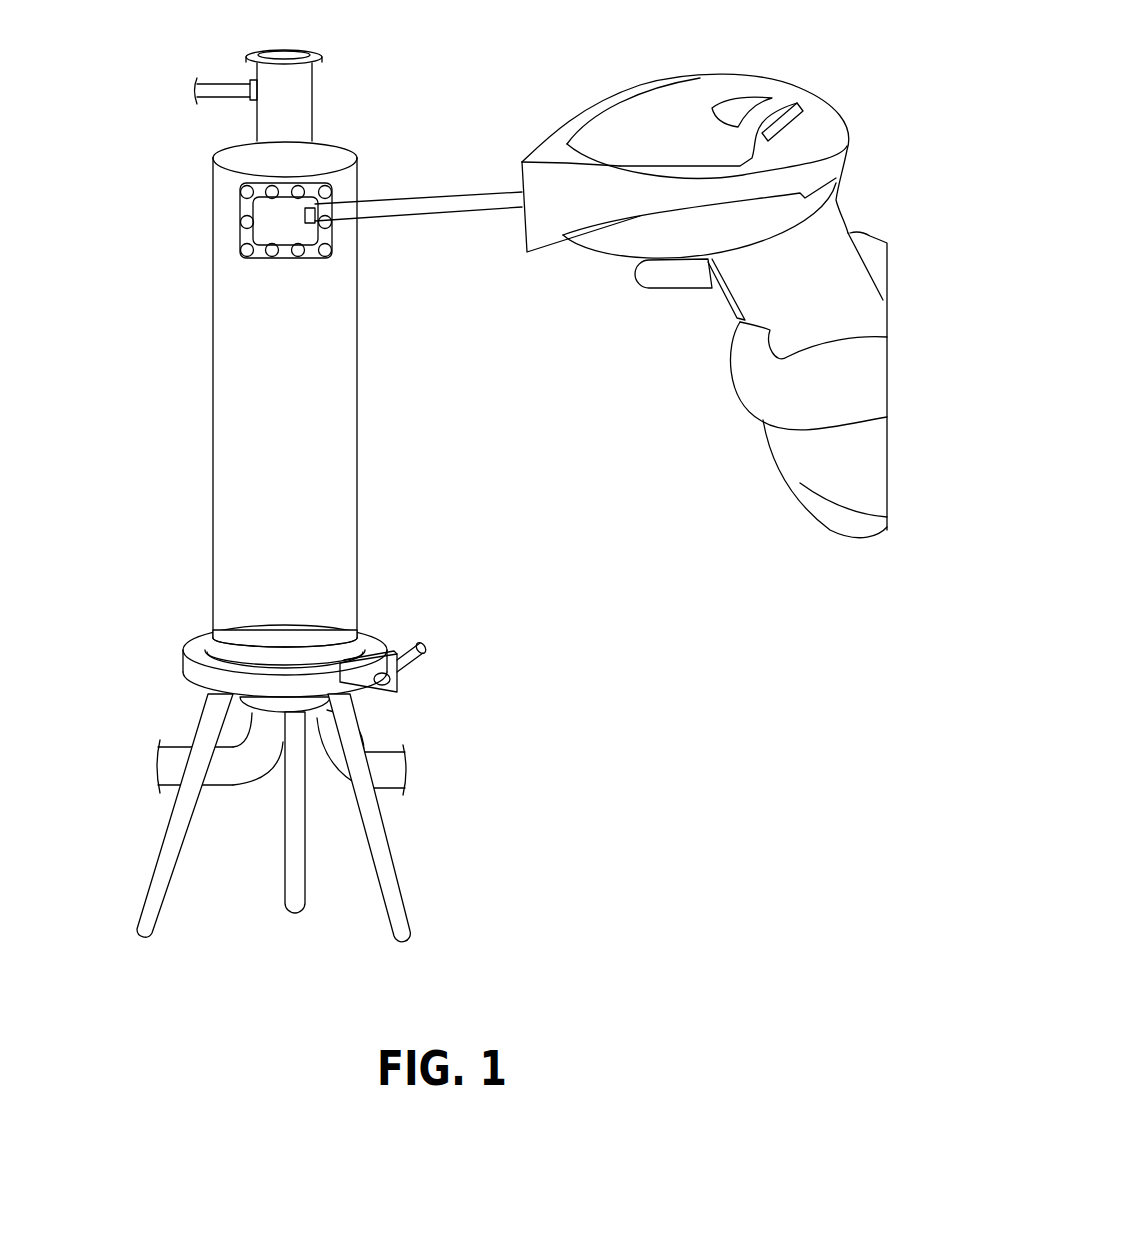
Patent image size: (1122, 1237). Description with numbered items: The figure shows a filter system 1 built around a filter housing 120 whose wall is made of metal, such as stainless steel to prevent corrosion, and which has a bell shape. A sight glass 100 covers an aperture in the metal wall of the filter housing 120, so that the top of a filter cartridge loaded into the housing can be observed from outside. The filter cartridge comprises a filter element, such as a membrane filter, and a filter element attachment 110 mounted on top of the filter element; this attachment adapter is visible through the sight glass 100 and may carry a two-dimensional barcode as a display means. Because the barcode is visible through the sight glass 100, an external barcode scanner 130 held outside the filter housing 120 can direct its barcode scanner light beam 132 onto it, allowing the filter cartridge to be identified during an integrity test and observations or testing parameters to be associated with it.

The filter system 1 is at (500, 578).
The sight glass 100 is at (200, 212).
The filter element attachment 110 is at (268, 200).
The filter housing 120 is at (200, 543).
The external barcode scanner 130 is at (636, 315).
The barcode scanner light beam 132 is at (478, 170).